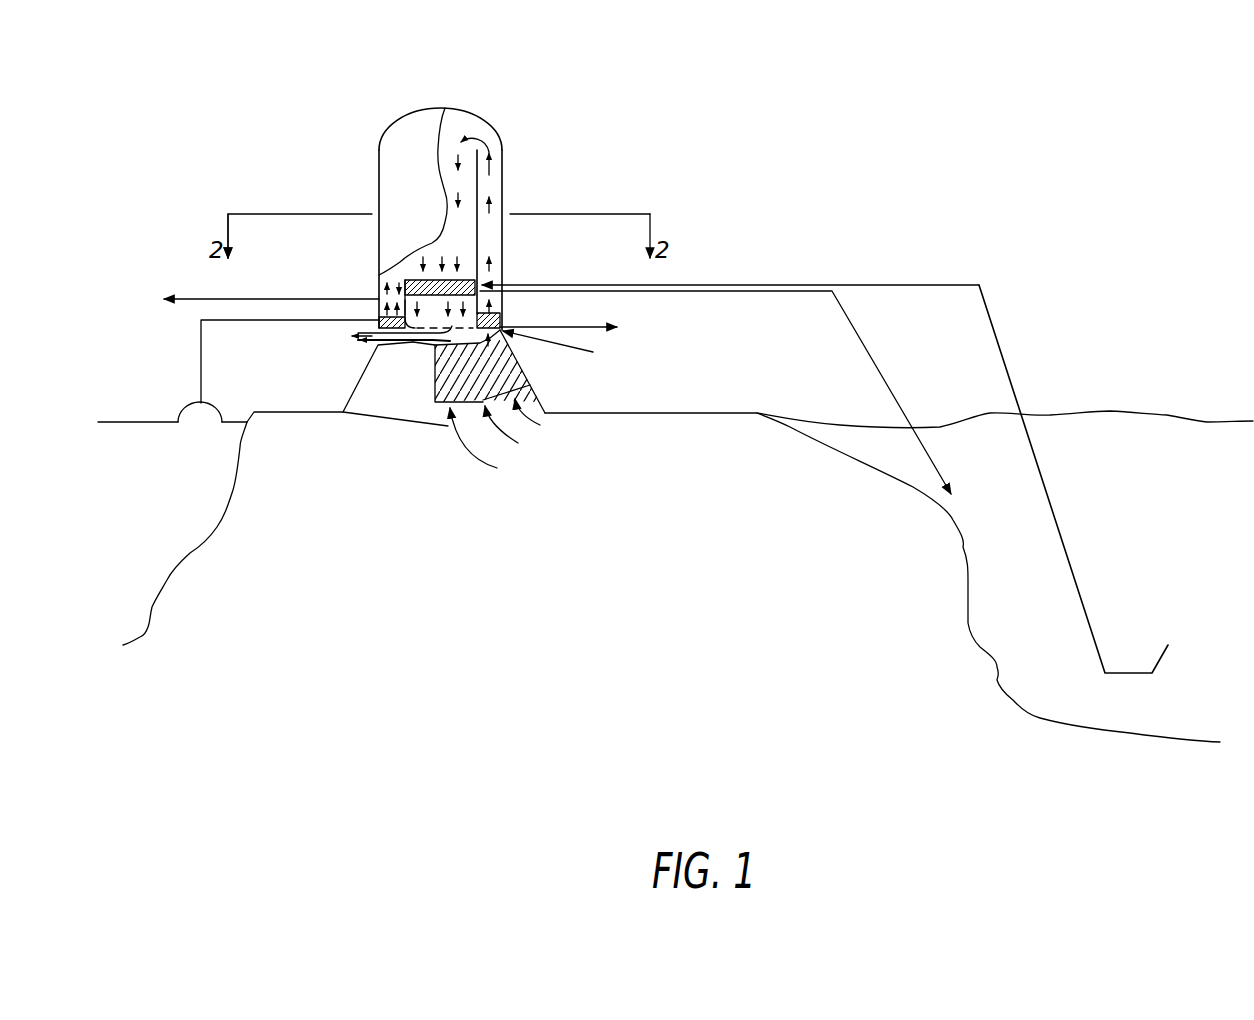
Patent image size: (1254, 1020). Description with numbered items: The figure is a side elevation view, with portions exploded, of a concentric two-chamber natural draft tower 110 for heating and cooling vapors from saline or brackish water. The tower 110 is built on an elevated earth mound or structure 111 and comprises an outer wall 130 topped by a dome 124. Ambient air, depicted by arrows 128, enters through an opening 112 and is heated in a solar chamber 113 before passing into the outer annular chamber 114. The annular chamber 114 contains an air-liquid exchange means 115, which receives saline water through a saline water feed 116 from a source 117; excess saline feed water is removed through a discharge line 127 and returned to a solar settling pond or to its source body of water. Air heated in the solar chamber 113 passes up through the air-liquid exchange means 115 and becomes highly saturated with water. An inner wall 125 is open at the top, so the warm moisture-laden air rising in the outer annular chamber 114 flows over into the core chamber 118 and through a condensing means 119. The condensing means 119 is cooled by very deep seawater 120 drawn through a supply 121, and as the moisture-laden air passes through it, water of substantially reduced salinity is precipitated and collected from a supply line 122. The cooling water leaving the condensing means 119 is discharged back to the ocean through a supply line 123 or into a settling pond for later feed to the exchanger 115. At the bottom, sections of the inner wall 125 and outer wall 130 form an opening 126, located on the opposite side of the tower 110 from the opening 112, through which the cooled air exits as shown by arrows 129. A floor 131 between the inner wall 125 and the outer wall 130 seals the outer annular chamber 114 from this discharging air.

The natural draft tower 110 is at (502, 150).
The elevated earth mound or structure 111 is at (378, 402).
The air inlet opening 112 is at (530, 386).
The solar chamber 113 is at (508, 353).
The outer annular chamber 114 is at (497, 260).
The air-liquid exchange means 115 is at (500, 319).
The saline water feed 116 is at (215, 321).
The saline water source 117 is at (116, 421).
The core chamber 118 is at (457, 188).
The condensing means 119 is at (405, 280).
The deep seawater 120 is at (1130, 673).
The deep seawater supply 121 is at (880, 285).
The fresh water supply line 122 is at (190, 299).
The cooling water discharge supply line 123 is at (875, 366).
The dome 124 is at (413, 113).
The inner wall 125 is at (478, 202).
The discharge opening 126 is at (378, 345).
The discharge line 127 is at (577, 327).
The incoming ambient air arrows 128 is at (497, 468).
The exiting cooled air arrows 129 is at (313, 342).
The outer wall 130 is at (379, 182).
The floor 131 is at (572, 348).